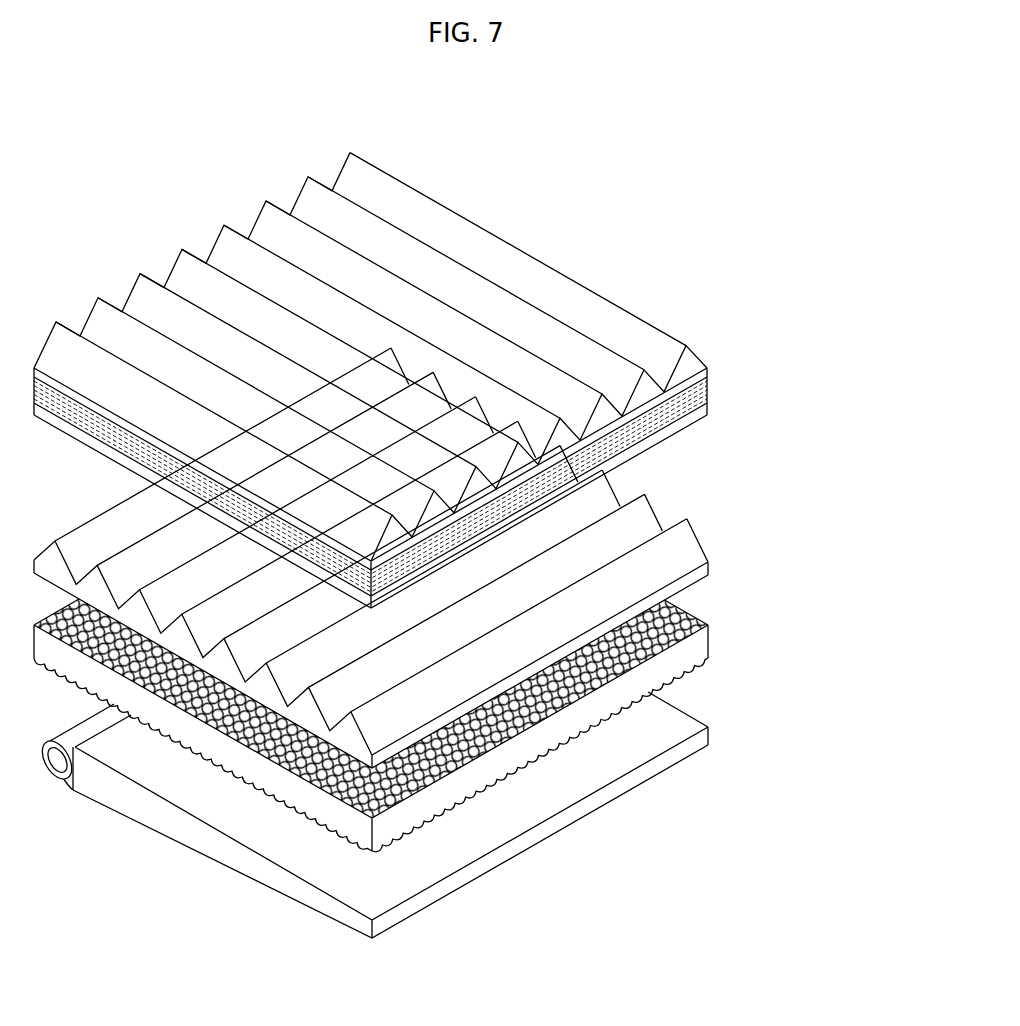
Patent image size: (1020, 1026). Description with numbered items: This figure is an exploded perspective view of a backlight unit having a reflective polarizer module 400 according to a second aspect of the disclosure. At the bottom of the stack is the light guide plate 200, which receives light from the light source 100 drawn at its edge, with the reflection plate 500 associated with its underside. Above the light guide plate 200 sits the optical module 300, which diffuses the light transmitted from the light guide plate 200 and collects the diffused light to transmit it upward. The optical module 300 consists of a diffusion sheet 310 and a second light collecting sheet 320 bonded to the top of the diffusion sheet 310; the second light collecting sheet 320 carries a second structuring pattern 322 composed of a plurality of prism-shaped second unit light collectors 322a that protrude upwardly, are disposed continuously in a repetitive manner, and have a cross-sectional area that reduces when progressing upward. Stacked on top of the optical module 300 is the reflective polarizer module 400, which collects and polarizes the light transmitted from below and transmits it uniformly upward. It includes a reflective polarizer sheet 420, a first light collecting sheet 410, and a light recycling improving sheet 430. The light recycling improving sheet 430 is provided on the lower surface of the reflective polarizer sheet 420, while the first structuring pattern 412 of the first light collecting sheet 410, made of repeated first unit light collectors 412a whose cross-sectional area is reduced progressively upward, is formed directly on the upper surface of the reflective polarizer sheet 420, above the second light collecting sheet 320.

The light source 100 is at (52, 786).
The light guide plate 200 is at (178, 822).
The optical module 300 is at (484, 600).
The diffusion sheet 310 is at (452, 721).
The second light collecting sheet 320 is at (461, 558).
The second structuring pattern 322 is at (668, 499).
The second unit light collector 322a is at (673, 552).
The reflective polarizer module 400 is at (491, 380).
The first light collecting sheet 410 is at (461, 361).
The first structuring pattern 412 is at (660, 317).
The first unit light collector 412a is at (672, 338).
The reflective polarizer sheet 420 is at (704, 394).
The light recycling improving sheet 430 is at (459, 505).
The reflection plate 500 is at (268, 896).